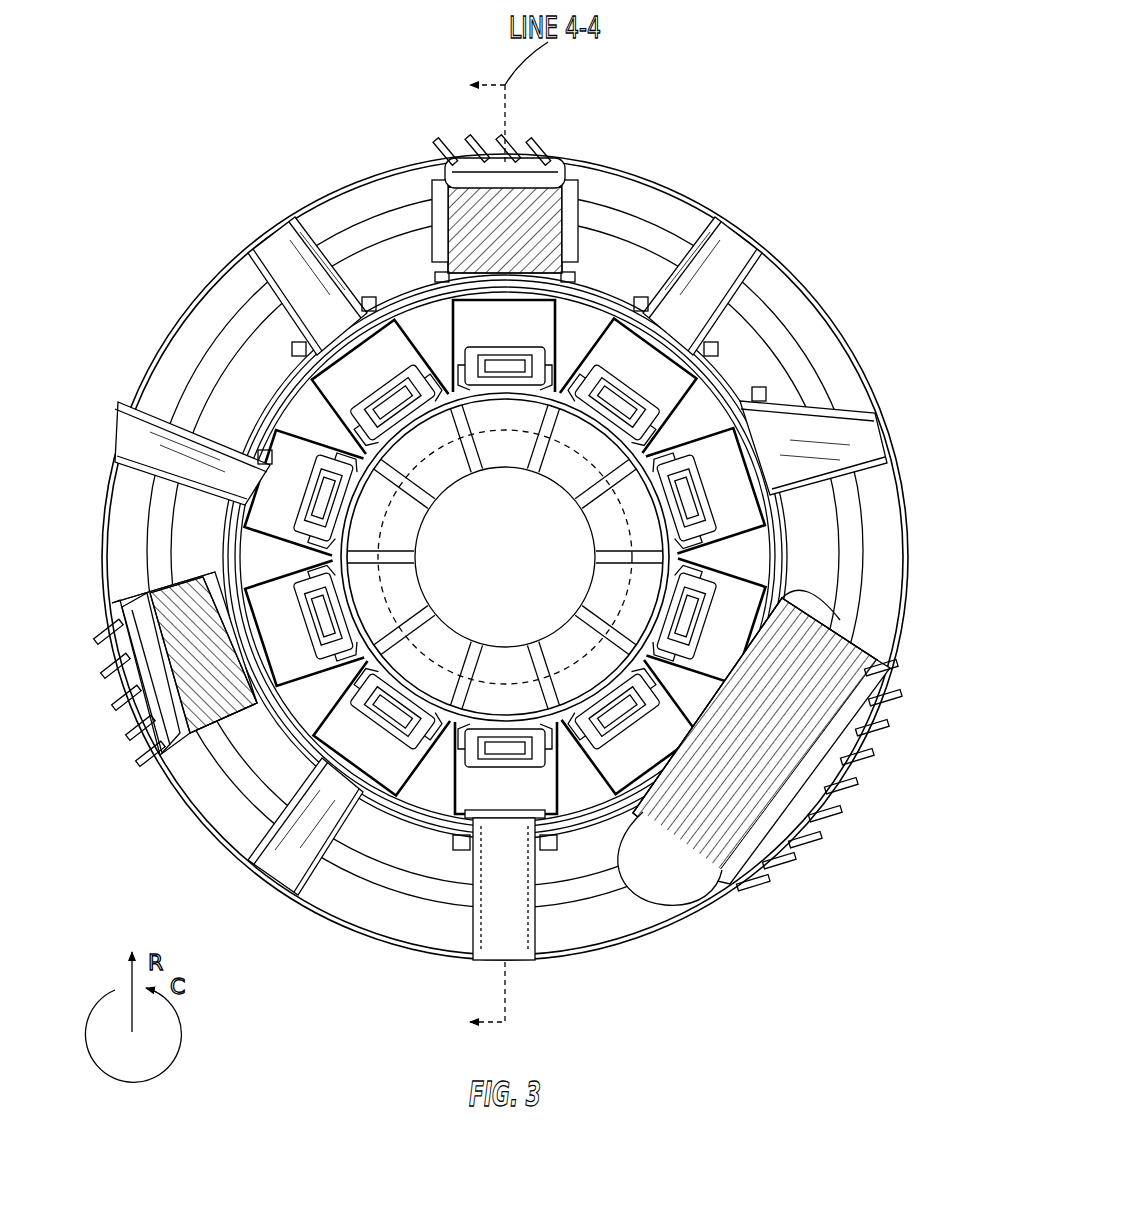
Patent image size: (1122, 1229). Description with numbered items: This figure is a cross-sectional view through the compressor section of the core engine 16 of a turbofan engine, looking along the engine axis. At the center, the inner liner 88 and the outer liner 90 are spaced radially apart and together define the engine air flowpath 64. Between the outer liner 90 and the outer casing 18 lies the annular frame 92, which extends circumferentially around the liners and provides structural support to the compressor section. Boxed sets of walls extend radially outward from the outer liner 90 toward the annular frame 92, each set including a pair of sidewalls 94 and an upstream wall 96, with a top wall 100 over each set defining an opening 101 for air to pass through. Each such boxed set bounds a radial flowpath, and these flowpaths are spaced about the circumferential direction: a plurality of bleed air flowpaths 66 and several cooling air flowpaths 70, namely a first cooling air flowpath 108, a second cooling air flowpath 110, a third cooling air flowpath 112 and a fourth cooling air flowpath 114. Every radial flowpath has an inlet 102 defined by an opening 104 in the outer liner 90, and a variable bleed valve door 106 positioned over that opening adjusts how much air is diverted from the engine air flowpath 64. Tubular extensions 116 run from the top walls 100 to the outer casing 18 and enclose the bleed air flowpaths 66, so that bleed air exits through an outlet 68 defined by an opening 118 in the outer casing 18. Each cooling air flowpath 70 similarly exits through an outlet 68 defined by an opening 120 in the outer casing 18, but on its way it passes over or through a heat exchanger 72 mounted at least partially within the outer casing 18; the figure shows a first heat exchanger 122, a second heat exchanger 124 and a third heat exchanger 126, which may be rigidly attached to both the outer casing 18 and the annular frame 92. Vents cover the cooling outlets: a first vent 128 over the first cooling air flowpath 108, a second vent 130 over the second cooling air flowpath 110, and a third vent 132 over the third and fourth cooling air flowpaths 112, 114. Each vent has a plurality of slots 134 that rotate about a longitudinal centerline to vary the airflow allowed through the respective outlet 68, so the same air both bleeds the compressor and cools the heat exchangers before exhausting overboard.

The core engine 16 is at (815, 175).
The outer casing 18 is at (822, 312).
The engine air flowpath 64 is at (745, 350).
The bleed air flowpaths 66 is at (895, 408).
The outlet 68 is at (905, 452).
The cooling air flowpath 70 is at (560, 240).
The heat exchanger 72 is at (548, 195).
The inner liner 88 is at (628, 500).
The outer liner 90 is at (590, 470).
The annular frame 92 is at (655, 392).
The sidewalls 94 is at (850, 432).
The upstream wall 96 is at (748, 505).
The top wall 100 is at (540, 330).
The opening 101 is at (365, 790).
The inlet 102 is at (370, 608).
The opening 104 is at (645, 522).
The variable bleed valve door 106 is at (285, 282).
The first cooling air flowpath 108 is at (465, 222).
The second cooling air flowpath 110 is at (303, 662).
The third cooling air flowpath 112 is at (612, 768).
The fourth cooling air flowpath 114 is at (862, 690).
The tubular extensions 116 is at (882, 498).
The opening 118 is at (905, 432).
The opening 120 is at (490, 160).
The first heat exchanger 122 is at (535, 165).
The second heat exchanger 124 is at (190, 518).
The third heat exchanger 126 is at (705, 850).
The first vent 128 is at (455, 145).
The second vent 130 is at (88, 665).
The third vent 132 is at (812, 705).
The slots 134 is at (118, 722).